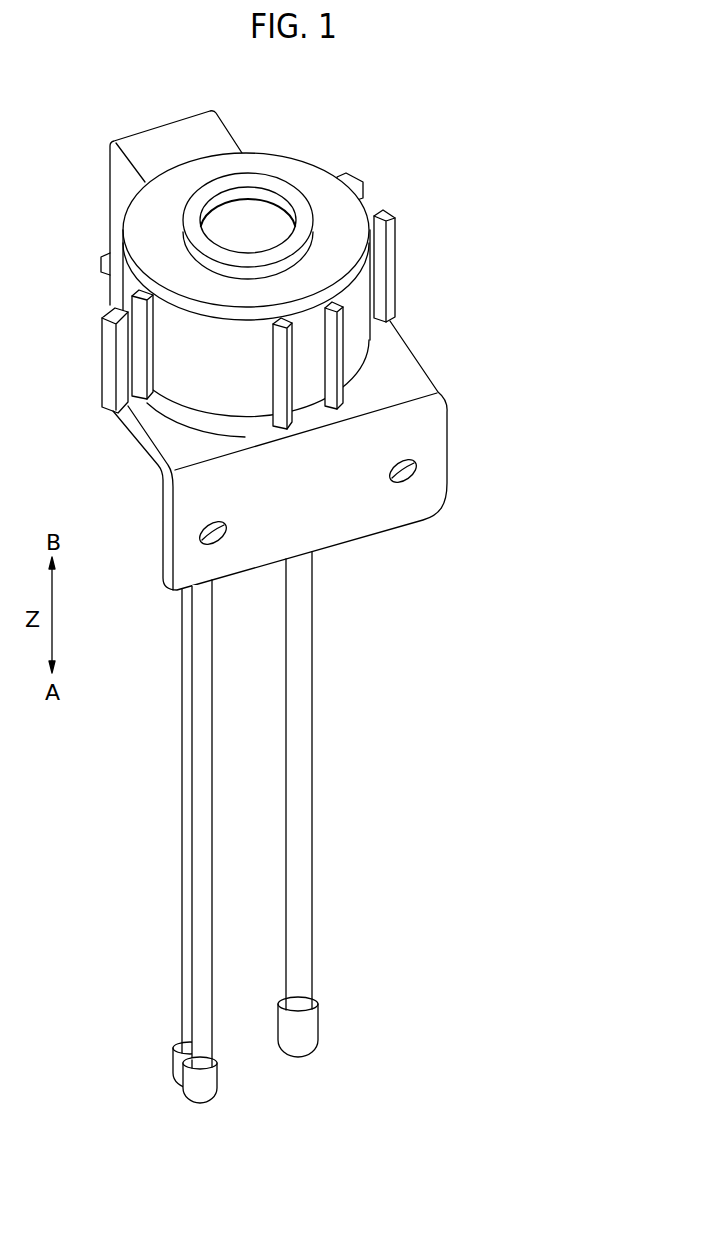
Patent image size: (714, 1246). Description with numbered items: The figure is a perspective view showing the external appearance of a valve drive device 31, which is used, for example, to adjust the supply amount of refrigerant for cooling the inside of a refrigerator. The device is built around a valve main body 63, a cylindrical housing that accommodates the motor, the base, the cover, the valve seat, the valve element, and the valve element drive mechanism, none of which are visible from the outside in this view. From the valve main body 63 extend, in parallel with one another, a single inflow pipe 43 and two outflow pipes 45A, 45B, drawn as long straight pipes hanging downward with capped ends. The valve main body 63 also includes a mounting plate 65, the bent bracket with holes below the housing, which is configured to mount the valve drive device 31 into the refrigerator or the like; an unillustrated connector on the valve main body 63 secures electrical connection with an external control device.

The valve drive device 31 is at (566, 82).
The valve main body 63 is at (321, 161).
The mounting plate 65 is at (420, 373).
The inflow pipe 43 is at (305, 755).
The outflow pipe 45A is at (207, 833).
The outflow pipe 45B is at (183, 887).